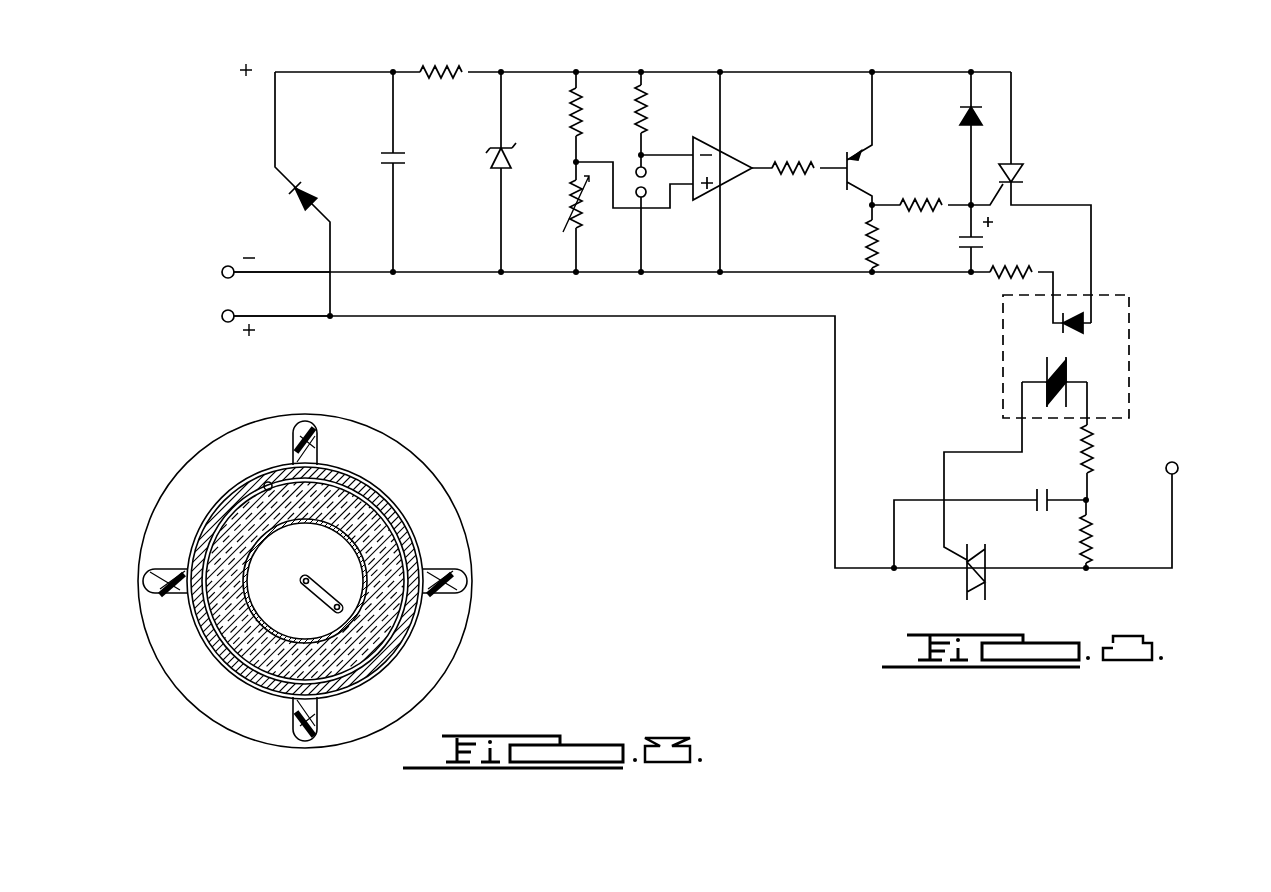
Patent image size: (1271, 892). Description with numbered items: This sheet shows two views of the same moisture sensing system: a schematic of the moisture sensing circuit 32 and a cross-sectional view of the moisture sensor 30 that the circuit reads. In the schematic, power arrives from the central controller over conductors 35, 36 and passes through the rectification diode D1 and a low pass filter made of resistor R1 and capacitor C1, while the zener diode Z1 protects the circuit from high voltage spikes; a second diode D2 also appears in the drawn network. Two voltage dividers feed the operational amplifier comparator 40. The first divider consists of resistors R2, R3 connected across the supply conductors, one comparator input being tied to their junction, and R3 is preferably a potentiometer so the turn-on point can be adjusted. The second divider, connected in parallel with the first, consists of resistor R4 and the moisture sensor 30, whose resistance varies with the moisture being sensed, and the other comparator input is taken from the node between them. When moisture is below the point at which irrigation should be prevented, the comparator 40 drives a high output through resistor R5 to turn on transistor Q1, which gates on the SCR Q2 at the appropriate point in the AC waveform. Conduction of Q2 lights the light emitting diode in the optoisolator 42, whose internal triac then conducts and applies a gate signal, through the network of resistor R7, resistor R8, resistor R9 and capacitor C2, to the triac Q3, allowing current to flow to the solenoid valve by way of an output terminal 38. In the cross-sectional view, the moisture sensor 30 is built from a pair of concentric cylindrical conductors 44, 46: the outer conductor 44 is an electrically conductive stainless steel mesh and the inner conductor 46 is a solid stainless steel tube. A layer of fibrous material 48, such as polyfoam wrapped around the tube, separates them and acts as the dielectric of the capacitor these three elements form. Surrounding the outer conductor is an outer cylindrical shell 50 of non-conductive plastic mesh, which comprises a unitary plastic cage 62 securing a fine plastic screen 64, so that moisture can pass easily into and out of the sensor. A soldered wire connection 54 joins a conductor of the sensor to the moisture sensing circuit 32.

In FIG. 8, the moisture sensor 30 is at (648, 194).
In FIG. 5, the moisture sensor 30 is at (490, 474).
In FIG. 8, the moisture sensing circuit 32 is at (1091, 116).
In FIG. 8, the conductor 35 is at (300, 318).
In FIG. 8, the power supply conductor 36 is at (282, 270).
In FIG. 8, the output terminal 38 is at (1172, 492).
In FIG. 8, the operational amplifier comparator 40 is at (726, 162).
In FIG. 8, the optoisolator 42 is at (1131, 322).
In FIG. 5, the cylindrical conductor 44 is at (222, 625).
In FIG. 5, the cylindrical conductor 46 is at (254, 563).
In FIG. 5, the layer of fibrous material 48 is at (260, 622).
In FIG. 5, the outer cylindrical shell 50 is at (337, 598).
In FIG. 5, the soldered wire connection 54 is at (268, 484).
In FIG. 5, the unitary plastic cage 62 is at (146, 580).
In FIG. 5, the fine plastic screen 64 is at (190, 622).
In FIG. 8, the resistor R1 is at (441, 66).
In FIG. 8, the resistor R2 is at (572, 106).
In FIG. 8, the resistor R3 is at (569, 201).
In FIG. 8, the resistor R4 is at (646, 113).
In FIG. 8, the resistor R5 is at (802, 164).
In FIG. 8, the resistor R7 is at (1022, 270).
In FIG. 8, the resistor R8 is at (1094, 448).
In FIG. 8, the resistor R9 is at (1100, 536).
In FIG. 8, the capacitor C1 is at (408, 160).
In FIG. 8, the capacitor C2 is at (1040, 490).
In FIG. 8, the rectification diode D1 is at (306, 186).
In FIG. 8, the diode D2 is at (960, 110).
In FIG. 8, the zener diode Z1 is at (496, 170).
In FIG. 8, the transistor Q1 is at (870, 166).
In FIG. 8, the SCR Q2 is at (1024, 170).
In FIG. 8, the triac Q3 is at (988, 559).